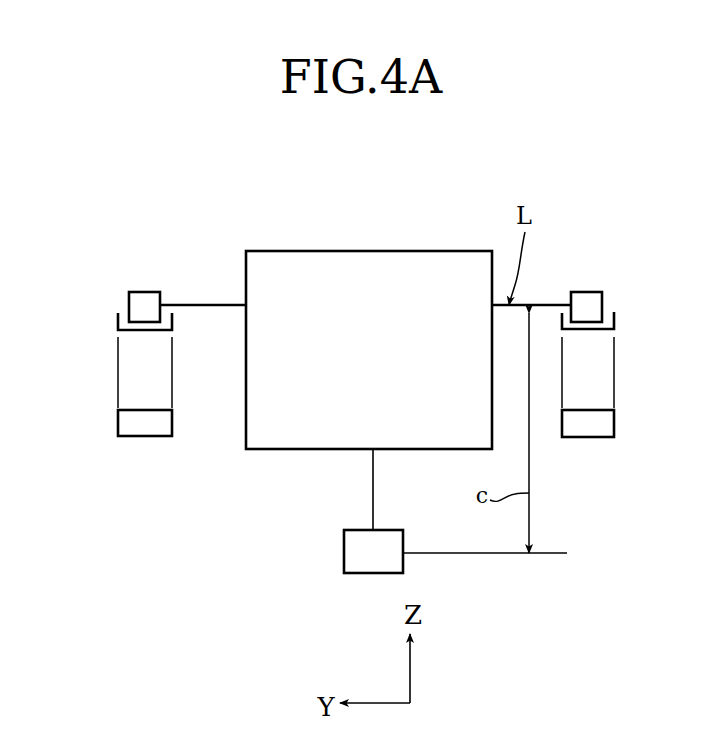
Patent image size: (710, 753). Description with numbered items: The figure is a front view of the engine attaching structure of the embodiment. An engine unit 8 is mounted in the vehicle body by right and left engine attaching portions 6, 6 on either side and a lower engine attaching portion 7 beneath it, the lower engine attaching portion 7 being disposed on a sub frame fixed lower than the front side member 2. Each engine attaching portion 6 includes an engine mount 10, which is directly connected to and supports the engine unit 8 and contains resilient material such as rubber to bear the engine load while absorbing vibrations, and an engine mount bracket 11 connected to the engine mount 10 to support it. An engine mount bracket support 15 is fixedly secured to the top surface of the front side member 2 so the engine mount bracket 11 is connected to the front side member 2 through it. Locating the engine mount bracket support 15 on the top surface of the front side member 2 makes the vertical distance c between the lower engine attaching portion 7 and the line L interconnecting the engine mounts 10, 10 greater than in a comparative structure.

The front side member 2 is at (143, 436).
The engine attaching portion 6 is at (182, 276).
The lower engine attaching portion 7 is at (308, 562).
The engine unit 8 is at (376, 251).
The engine mount 10 is at (146, 292).
The engine mount bracket 11 is at (118, 318).
The engine mount bracket support 15 is at (117, 370).